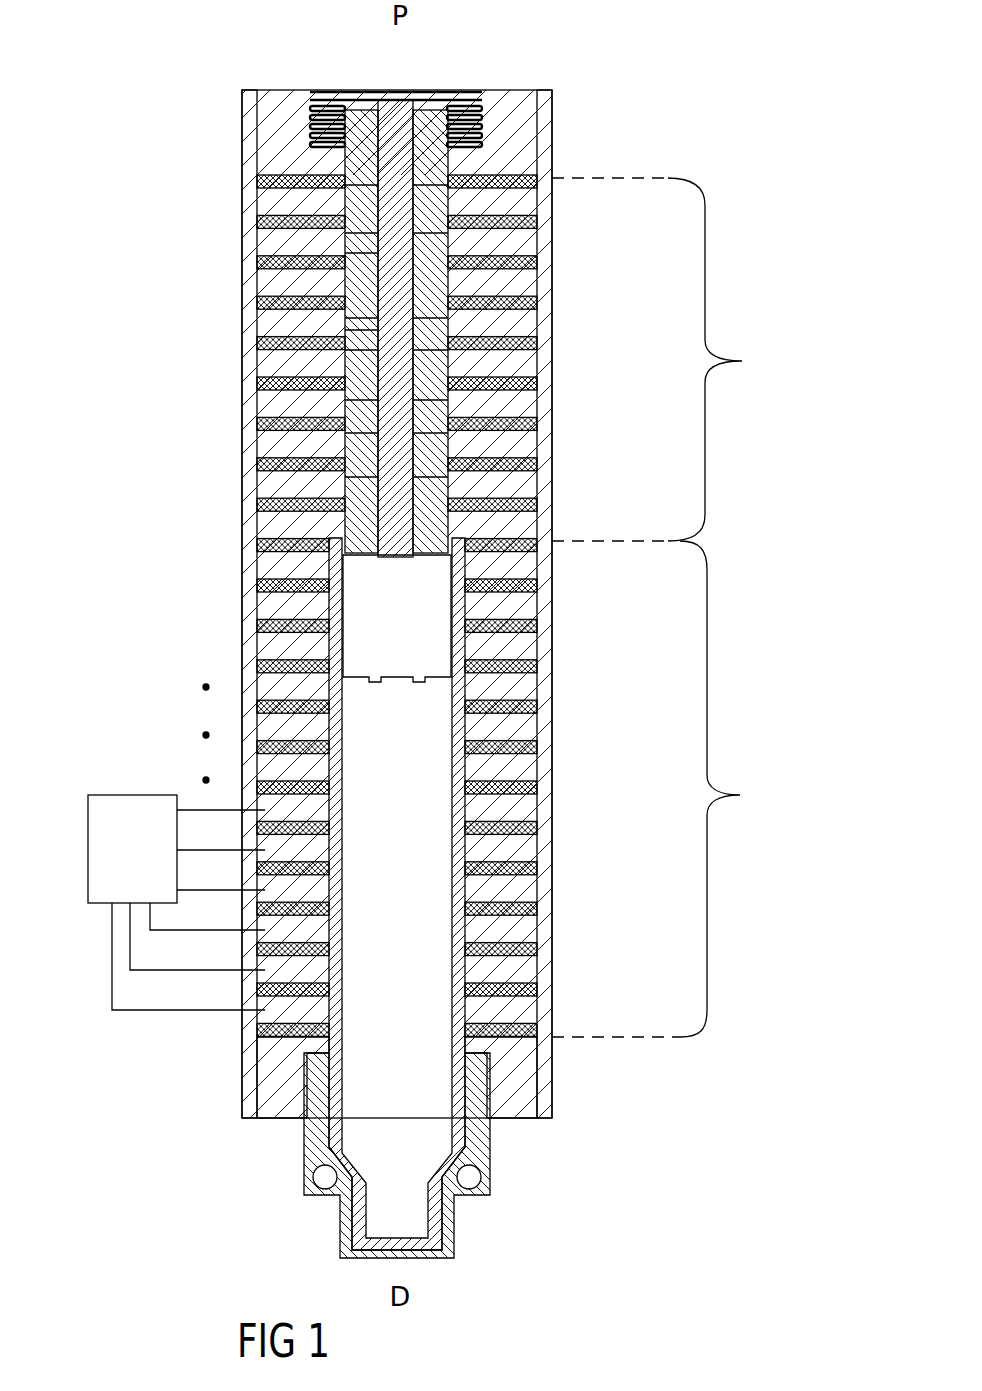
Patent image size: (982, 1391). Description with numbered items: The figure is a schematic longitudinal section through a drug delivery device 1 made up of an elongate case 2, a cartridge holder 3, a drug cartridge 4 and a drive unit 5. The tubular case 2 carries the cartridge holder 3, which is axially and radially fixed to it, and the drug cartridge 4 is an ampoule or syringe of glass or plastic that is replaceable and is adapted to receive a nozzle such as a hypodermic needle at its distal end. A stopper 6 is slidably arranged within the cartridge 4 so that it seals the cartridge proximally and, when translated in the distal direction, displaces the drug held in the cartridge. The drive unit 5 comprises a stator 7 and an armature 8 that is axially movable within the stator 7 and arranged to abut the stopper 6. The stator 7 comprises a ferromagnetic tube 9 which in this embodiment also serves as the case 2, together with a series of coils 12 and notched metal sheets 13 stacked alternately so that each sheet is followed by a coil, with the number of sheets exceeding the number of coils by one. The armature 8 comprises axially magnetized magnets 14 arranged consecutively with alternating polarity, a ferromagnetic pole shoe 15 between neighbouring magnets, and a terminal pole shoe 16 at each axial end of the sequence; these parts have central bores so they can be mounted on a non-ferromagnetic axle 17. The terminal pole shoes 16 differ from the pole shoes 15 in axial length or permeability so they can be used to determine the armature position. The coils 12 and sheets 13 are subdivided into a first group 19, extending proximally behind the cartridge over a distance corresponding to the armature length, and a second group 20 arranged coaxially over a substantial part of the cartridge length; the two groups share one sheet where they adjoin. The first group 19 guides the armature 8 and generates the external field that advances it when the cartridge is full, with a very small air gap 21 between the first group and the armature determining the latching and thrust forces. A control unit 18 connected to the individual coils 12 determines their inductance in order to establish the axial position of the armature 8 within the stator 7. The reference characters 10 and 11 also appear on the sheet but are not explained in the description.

The drug delivery device 1 is at (216, 84).
The case 2 is at (242, 182).
The cartridge holder 3 is at (475, 1163).
The drug cartridge 4 is at (457, 836).
The drive unit 5 is at (419, 293).
The stopper 6 is at (420, 613).
The stator 7 is at (548, 352).
The armature 8 is at (458, 282).
The ferromagnetic tube 9 is at (401, 606).
The bottom block 10 is at (517, 1100).
The top chamber 11 is at (553, 96).
The coils 12 is at (272, 525).
The notched metal sheets 13 is at (262, 502).
The magnets 14 is at (343, 210).
The pole shoes 15 is at (433, 248).
The terminal pole shoes 16 is at (432, 123).
The non-ferromagnetic axle 17 is at (343, 253).
The control unit 18 is at (150, 865).
The first group 19 is at (666, 359).
The second group 20 is at (668, 789).
The air gap 21 is at (343, 328).